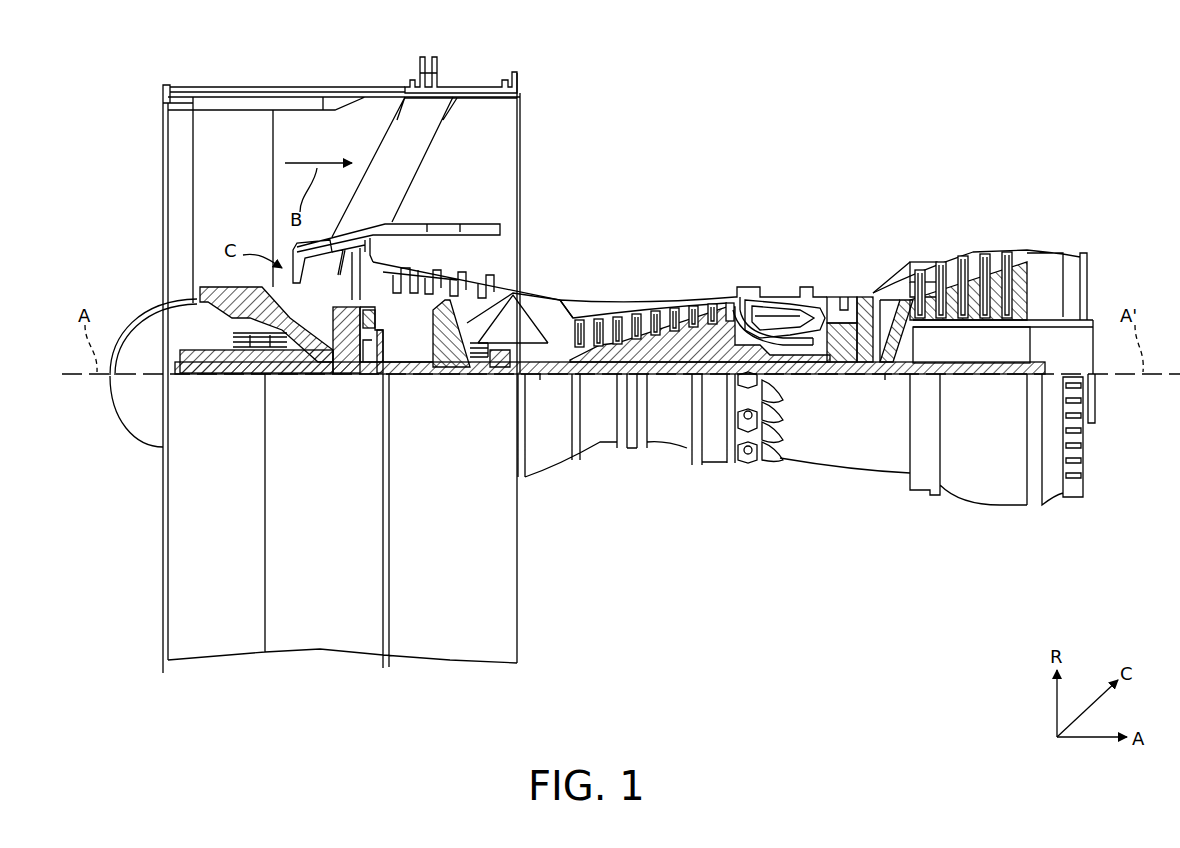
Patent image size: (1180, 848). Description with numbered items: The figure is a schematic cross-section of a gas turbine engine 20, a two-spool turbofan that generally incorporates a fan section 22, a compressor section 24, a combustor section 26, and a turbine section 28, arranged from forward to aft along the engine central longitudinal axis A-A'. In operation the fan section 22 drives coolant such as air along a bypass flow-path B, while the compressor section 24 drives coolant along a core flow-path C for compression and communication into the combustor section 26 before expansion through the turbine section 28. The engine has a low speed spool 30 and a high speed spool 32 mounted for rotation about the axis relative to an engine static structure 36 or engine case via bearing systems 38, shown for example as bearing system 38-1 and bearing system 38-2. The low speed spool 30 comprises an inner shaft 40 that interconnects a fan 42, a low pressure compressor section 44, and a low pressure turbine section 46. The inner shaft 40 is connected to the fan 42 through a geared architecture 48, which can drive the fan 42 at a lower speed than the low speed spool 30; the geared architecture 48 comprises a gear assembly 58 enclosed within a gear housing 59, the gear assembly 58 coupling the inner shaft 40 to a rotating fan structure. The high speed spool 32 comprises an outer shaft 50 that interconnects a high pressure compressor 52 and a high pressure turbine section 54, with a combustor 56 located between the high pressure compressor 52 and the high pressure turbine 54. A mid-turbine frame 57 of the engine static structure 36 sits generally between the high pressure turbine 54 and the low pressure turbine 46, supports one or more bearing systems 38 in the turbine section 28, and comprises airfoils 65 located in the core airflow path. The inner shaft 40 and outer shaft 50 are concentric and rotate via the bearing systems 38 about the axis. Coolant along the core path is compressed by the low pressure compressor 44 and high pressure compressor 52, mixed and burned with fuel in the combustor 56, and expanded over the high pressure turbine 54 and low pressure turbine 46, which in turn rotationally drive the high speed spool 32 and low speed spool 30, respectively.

The gas turbine engine 20 is at (831, 82).
The fan section 22 is at (363, 70).
The compressor section 24 is at (390, 187).
The combustor section 26 is at (830, 187).
The turbine section 28 is at (1040, 187).
The low speed spool 30 is at (678, 374).
The high speed spool 32 is at (722, 335).
The engine static structure 36 is at (713, 442).
The bearing system 38 is at (890, 335).
The bearing system 38-1 is at (243, 348).
The bearing system 38-2 is at (470, 365).
The inner shaft 40 is at (540, 376).
The fan 42 is at (234, 211).
The low pressure compressor section 44 is at (457, 272).
The low pressure turbine section 46 is at (975, 258).
The geared architecture 48 is at (343, 405).
The outer shaft 50 is at (770, 355).
The high pressure compressor 52 is at (670, 310).
The high pressure turbine section 54 is at (845, 300).
The combustor 56 is at (790, 306).
The mid-turbine frame 57 is at (895, 300).
The gear assembly 58 is at (367, 345).
The gear housing 59 is at (367, 322).
The airfoils 65 is at (907, 292).